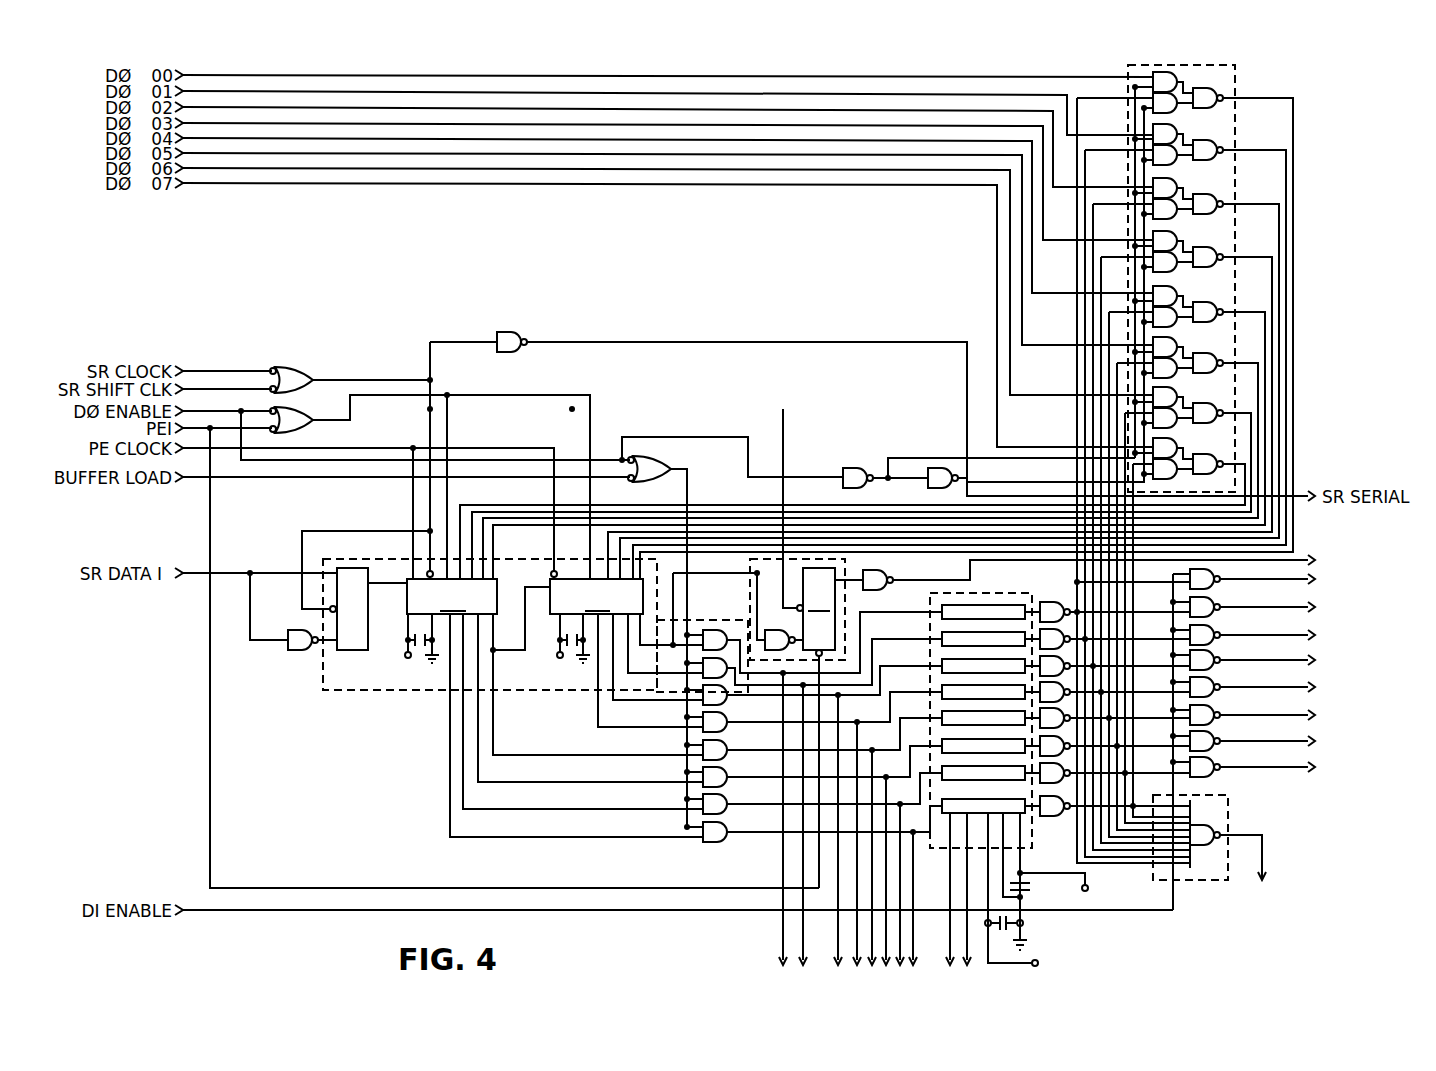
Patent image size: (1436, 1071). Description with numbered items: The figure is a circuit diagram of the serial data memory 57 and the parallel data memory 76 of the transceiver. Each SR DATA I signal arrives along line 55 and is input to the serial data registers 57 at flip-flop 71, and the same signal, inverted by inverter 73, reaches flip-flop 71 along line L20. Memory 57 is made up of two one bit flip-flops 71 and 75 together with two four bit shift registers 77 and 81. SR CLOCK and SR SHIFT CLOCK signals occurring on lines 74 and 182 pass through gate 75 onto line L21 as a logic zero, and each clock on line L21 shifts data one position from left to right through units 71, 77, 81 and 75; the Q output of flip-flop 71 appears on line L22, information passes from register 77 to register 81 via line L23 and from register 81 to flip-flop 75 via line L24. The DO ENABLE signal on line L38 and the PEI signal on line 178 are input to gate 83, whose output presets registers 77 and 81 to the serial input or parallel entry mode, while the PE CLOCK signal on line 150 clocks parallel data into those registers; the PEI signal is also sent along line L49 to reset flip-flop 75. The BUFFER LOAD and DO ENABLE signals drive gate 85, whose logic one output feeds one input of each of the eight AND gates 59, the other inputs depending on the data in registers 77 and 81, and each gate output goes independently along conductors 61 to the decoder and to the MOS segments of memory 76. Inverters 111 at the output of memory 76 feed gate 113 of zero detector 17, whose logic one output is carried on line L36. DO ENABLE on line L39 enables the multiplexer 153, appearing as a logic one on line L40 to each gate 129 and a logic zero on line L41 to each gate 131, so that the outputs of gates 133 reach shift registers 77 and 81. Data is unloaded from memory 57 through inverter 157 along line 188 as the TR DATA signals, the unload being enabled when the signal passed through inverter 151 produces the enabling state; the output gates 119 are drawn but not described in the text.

The inverter 151 is at (206, 204).
The multiplexer 153 is at (1243, 87).
The gates 133 is at (1215, 240).
The gates 129 is at (1177, 458).
The gates 131 is at (1177, 481).
The line 74 is at (200, 371).
The line 182 is at (215, 389).
The gate / flip-flop 75 is at (300, 368).
The gate 83 is at (300, 410).
The line 178 is at (196, 430).
The line 150 is at (222, 450).
The flip-flop 71 is at (345, 568).
The line 55 is at (182, 578).
The inverter 73 is at (298, 655).
The serial data registers (memory) 57 is at (398, 697).
The four bit shift register 77 is at (541, 708).
The four bit shift register 81 is at (614, 653).
The gate 85 is at (670, 462).
The inverter 157 is at (885, 576).
The memory 76 is at (999, 596).
The AND gates 59 is at (729, 852).
The conductors 61 is at (766, 940).
The inverters 111 is at (1052, 812).
The zero detector 17 is at (1230, 813).
The gate 113 is at (1208, 852).
The output gates 119 is at (1215, 775).
The line 188 is at (1295, 562).
The line L20 is at (268, 641).
The line L21 is at (352, 532).
The line L22 is at (386, 590).
The line L23 is at (500, 660).
The line L24 is at (660, 626).
The line L36 is at (1263, 850).
The line L38 is at (238, 408).
The line L39 is at (607, 458).
The line L40 is at (933, 477).
The line L41 is at (1008, 483).
The line L49 is at (472, 888).